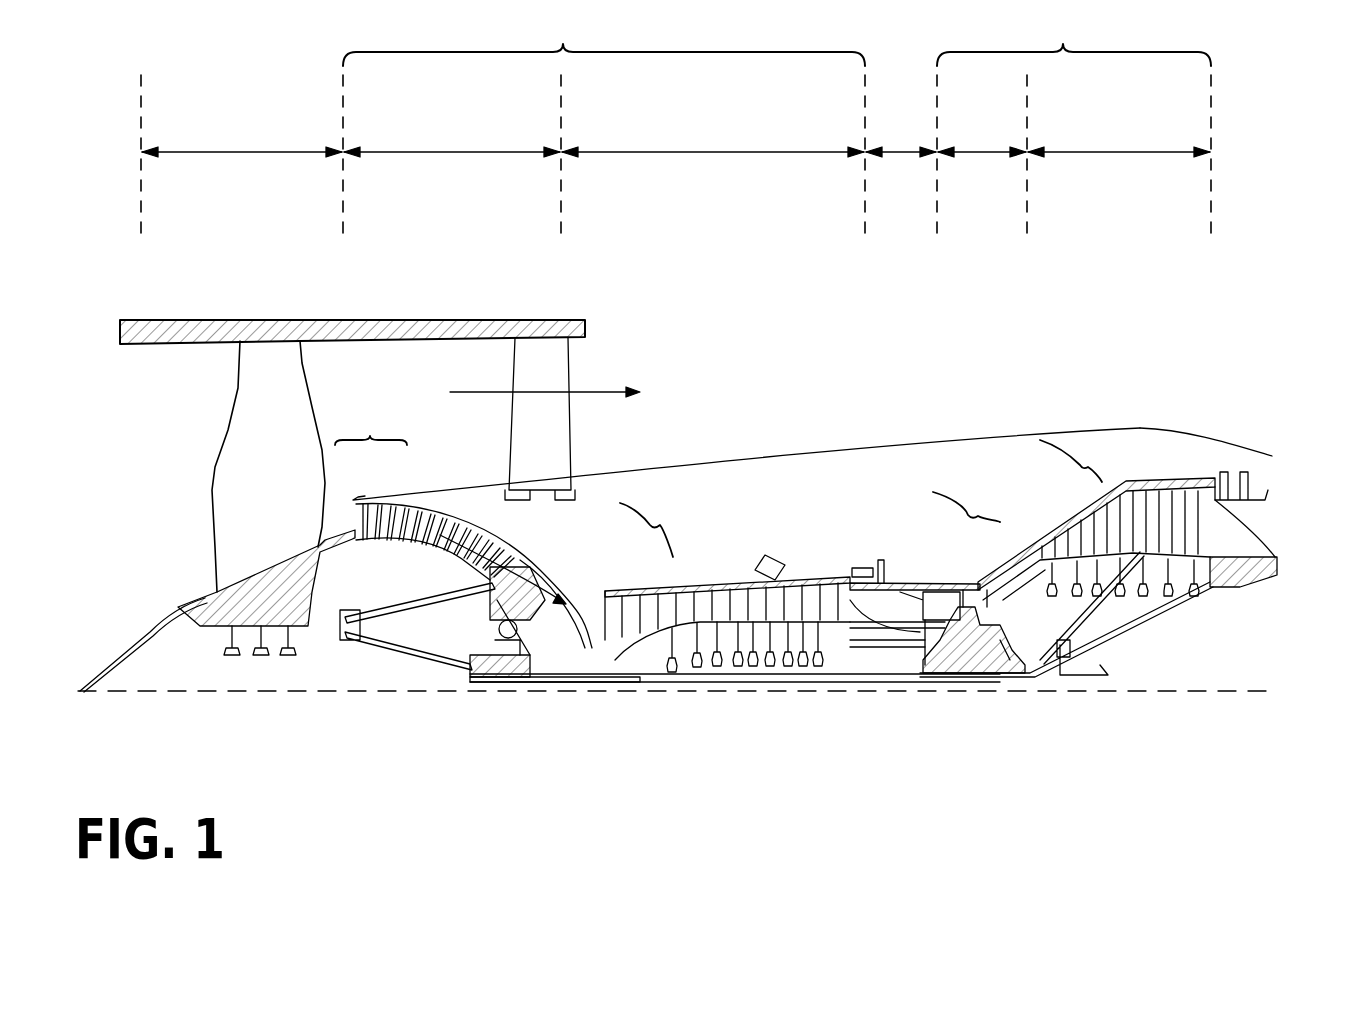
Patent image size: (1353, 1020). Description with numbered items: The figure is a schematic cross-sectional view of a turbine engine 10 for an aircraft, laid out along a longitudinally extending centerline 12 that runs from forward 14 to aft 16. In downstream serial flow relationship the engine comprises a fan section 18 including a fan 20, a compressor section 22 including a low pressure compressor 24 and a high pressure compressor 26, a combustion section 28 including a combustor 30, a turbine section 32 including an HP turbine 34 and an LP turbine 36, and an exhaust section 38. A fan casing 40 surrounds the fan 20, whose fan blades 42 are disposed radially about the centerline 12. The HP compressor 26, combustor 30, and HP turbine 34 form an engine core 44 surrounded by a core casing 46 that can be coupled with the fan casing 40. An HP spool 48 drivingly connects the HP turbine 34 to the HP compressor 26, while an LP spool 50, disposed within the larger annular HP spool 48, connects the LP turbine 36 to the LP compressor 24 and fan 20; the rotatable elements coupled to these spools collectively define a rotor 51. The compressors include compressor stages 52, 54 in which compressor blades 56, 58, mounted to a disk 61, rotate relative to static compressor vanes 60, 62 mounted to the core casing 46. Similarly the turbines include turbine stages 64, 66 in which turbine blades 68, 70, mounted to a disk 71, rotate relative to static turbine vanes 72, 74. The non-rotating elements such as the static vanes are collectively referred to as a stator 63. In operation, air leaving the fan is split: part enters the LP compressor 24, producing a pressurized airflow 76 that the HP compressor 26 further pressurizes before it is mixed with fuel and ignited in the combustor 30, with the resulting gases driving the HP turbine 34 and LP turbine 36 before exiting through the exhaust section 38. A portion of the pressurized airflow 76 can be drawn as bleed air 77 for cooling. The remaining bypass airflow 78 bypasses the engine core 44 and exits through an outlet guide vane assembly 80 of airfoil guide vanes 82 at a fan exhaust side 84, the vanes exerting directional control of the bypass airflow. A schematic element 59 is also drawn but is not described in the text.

The turbine engine 10 is at (888, 313).
The engine centerline 12 is at (241, 692).
The forward 14 is at (88, 457).
The aft 16 is at (1300, 542).
The fan section 18 is at (246, 138).
The fan 20 is at (176, 533).
The compressor section 22 is at (604, 39).
The low pressure compressor 24 is at (449, 138).
The high pressure compressor 26 is at (713, 138).
The combustion section 28 is at (903, 129).
The combustor 30 is at (912, 590).
The turbine section 32 is at (1074, 38).
The HP turbine 34 is at (981, 133).
The LP turbine 36 is at (1127, 138).
The exhaust section 38 is at (1285, 500).
The fan casing 40 is at (258, 343).
The fan blades 42 is at (300, 397).
The engine core 44 is at (843, 497).
The core casing 46 is at (1160, 473).
The HP spool 48 is at (878, 652).
The LP spool 50 is at (493, 683).
The rotor 51 is at (439, 548).
The compressor stages 52 is at (487, 543).
The compressor stages 54 is at (727, 578).
The compressor blades 56 is at (379, 505).
The compressor blades 58 is at (629, 600).
The inner flow path wall 59 is at (372, 545).
The static compressor vanes 60 is at (362, 503).
The disk 61 is at (634, 660).
The static compressor vanes 62 is at (611, 600).
The stator 63 is at (616, 655).
The turbine stages 64 is at (925, 549).
The turbine stages 66 is at (1127, 517).
The turbine blades 68 is at (955, 590).
The turbine blades 70 is at (1047, 525).
The disk 71 is at (956, 650).
The static turbine vanes 72 is at (935, 590).
The static turbine vanes 74 is at (1040, 540).
The pressurized airflow 76 is at (560, 590).
The bleed air 77 is at (719, 584).
The bypass airflow 78 is at (478, 392).
The outlet guide vane assembly 80 is at (583, 444).
The airfoil guide vanes 82 is at (522, 432).
The fan exhaust side 84 is at (611, 352).